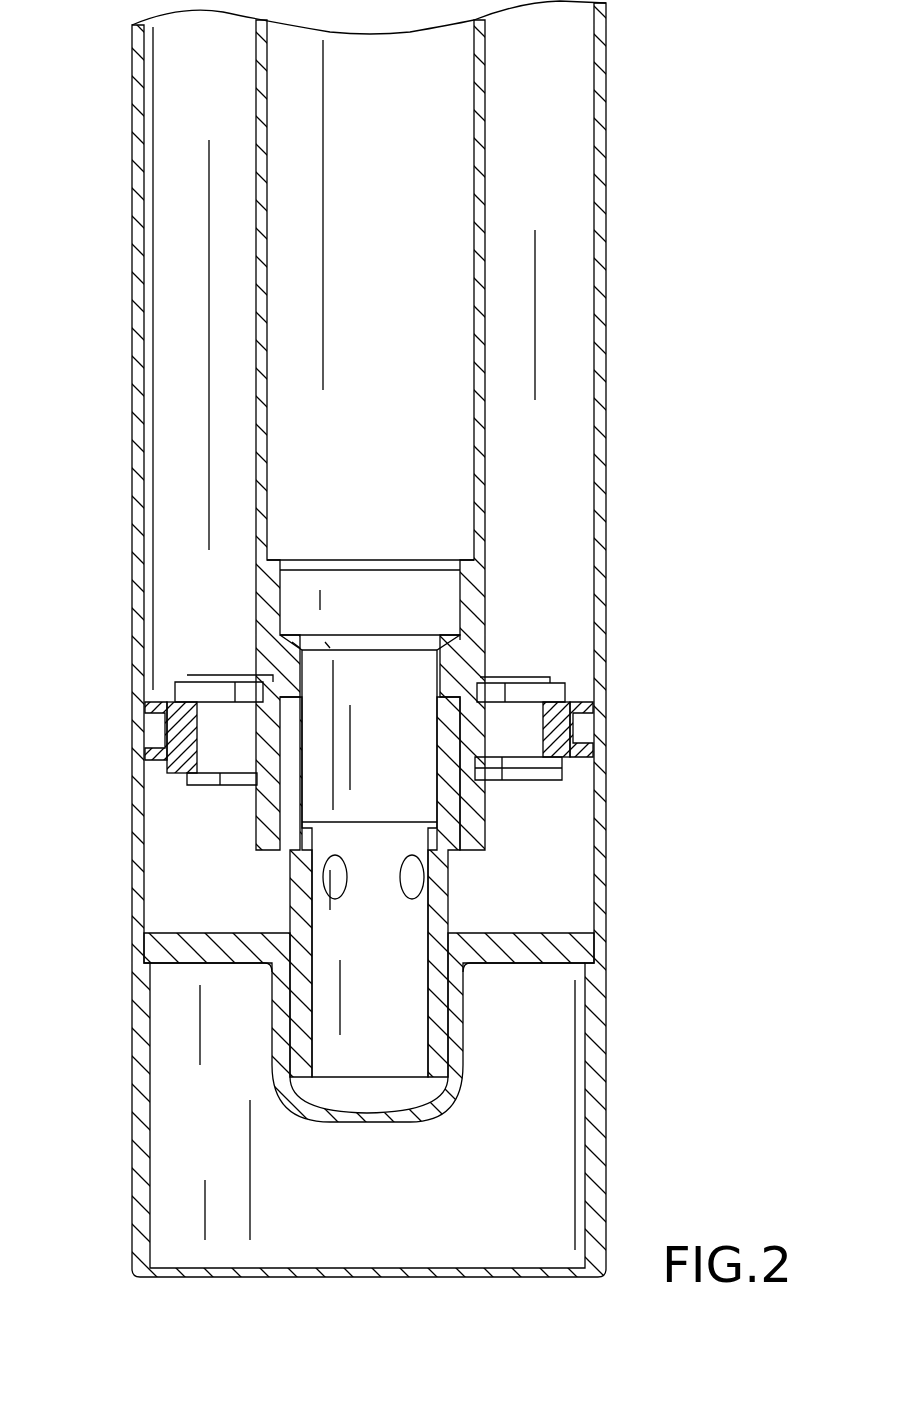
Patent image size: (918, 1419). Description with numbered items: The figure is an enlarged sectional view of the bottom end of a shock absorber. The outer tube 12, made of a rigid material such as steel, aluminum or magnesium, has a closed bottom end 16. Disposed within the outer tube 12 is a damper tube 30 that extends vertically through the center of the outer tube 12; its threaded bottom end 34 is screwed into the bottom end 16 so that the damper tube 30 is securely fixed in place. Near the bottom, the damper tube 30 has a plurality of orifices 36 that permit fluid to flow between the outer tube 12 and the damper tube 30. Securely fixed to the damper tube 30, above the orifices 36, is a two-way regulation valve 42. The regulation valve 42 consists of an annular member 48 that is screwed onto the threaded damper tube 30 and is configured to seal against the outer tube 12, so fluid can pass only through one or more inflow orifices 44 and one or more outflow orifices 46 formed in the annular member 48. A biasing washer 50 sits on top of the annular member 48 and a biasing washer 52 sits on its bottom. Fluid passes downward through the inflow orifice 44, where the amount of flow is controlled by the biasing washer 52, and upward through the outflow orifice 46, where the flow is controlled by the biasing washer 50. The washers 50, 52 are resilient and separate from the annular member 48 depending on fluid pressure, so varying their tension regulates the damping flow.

The outer tube 12 is at (606, 302).
The closed bottom end 16 is at (523, 950).
The damper tube 30 is at (486, 437).
The threaded bottom end 34 is at (303, 1005).
The orifices 36 is at (333, 878).
The two-way regulation valve 42 is at (570, 690).
The inflow orifice 44 is at (215, 760).
The outflow orifice 46 is at (520, 697).
The annular member 48 is at (182, 726).
The biasing washer 50 is at (211, 680).
The biasing washer 52 is at (232, 785).